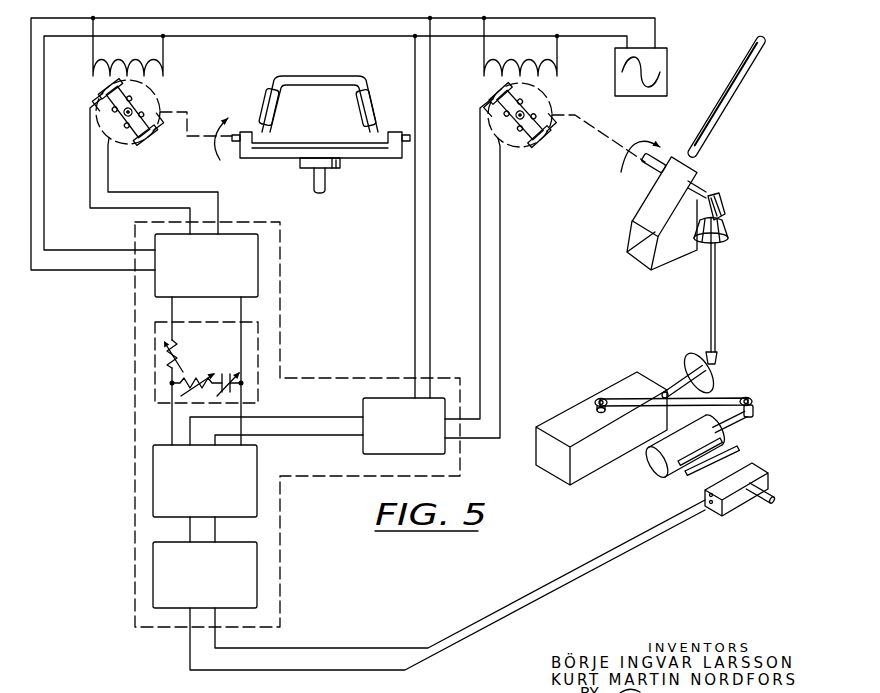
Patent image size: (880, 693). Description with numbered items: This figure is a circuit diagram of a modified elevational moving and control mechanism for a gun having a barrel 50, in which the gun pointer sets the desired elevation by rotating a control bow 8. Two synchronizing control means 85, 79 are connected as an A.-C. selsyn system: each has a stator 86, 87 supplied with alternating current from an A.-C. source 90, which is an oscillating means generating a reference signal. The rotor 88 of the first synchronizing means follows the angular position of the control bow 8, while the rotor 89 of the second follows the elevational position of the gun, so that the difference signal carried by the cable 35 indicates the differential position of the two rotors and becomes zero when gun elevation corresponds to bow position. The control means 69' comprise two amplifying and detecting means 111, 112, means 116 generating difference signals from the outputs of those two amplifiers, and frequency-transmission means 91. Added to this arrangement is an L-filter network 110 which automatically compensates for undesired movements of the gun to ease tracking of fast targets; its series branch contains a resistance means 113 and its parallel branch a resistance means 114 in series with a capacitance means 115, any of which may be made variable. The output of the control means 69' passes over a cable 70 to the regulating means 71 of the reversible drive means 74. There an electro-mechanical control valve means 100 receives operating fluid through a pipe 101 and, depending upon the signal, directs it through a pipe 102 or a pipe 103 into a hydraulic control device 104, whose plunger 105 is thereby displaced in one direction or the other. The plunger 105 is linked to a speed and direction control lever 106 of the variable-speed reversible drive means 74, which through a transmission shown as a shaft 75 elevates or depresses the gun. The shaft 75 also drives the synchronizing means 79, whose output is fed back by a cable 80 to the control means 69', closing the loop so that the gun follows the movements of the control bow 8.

The control bow 8 is at (331, 80).
The cable 35 is at (168, 208).
The barrel 50 is at (727, 117).
The control means 69' is at (297, 424).
The cable 70 is at (592, 562).
The regulating means 71 is at (712, 482).
The reversible drive means 74 is at (575, 410).
The shaft 75 is at (716, 312).
The electric synchronizing means 79 is at (539, 121).
The cable 80 is at (500, 228).
The control means 85 is at (151, 123).
The stator 86 is at (100, 78).
The stator 87 is at (490, 83).
The rotor 88 is at (143, 137).
The rotor 89 is at (538, 143).
The A.-C. source 90 is at (666, 63).
The frequency-transmission means 91 is at (250, 561).
The control valve means 100 is at (735, 500).
The pipe 101 is at (750, 494).
The pipe 102 is at (712, 460).
The pipe 103 is at (693, 473).
The hydraulic control device 104 is at (653, 463).
The plunger 105 is at (746, 419).
The speed and direction control lever 106 is at (718, 398).
The L-filter network 110 is at (239, 371).
The amplifying and detecting means 111 is at (252, 265).
The amplifying and detecting means 112 is at (401, 398).
The resistance means 113 is at (180, 348).
The resistance means 114 is at (196, 393).
The capacitance means 115 is at (259, 387).
The means generating difference signals 116 is at (250, 508).